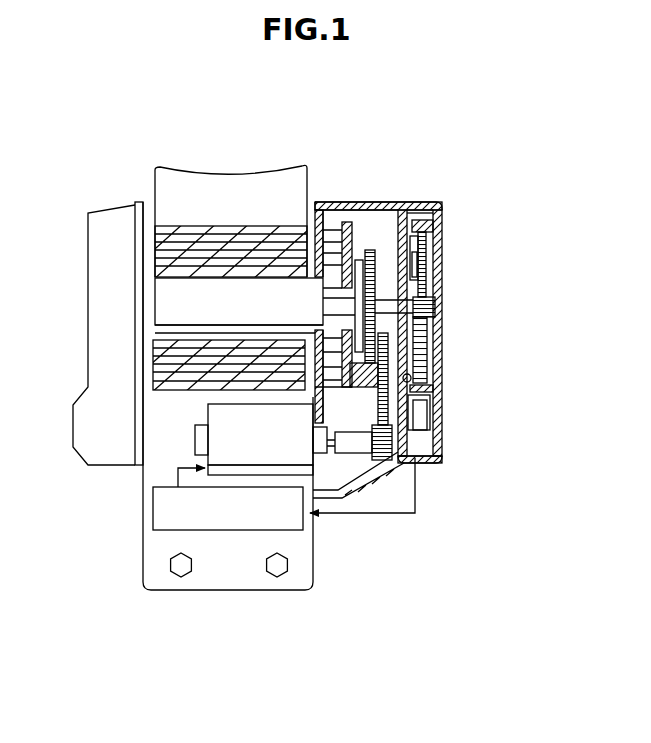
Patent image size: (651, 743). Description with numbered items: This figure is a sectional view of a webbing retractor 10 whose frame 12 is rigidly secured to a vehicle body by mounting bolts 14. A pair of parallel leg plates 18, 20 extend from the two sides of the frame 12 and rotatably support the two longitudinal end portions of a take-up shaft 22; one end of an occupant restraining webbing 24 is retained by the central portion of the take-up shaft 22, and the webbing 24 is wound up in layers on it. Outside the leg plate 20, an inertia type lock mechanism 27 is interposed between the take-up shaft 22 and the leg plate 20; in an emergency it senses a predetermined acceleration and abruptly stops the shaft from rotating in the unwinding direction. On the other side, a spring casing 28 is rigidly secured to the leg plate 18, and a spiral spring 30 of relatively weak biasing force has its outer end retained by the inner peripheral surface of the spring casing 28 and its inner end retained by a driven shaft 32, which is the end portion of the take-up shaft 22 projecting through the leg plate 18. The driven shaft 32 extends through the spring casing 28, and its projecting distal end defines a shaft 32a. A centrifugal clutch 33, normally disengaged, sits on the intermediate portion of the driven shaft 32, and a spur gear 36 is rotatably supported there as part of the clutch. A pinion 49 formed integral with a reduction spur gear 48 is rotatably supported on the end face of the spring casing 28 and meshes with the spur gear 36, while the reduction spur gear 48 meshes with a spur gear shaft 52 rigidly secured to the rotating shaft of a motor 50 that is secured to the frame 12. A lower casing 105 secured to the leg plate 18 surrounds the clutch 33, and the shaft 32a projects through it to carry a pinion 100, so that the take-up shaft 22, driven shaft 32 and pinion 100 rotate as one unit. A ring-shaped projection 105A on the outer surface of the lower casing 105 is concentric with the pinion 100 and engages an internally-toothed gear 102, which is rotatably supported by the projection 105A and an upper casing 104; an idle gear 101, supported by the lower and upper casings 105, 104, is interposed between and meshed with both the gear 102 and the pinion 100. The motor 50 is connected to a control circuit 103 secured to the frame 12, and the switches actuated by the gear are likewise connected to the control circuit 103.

The webbing retractor 10 is at (323, 132).
The frame 12 is at (143, 502).
The mounting bolts 14 is at (278, 578).
The leg plate 18 is at (316, 203).
The leg plate 20 is at (138, 202).
The take-up shaft 22 is at (152, 303).
The occupant restraining webbing 24 is at (243, 175).
The inertia type lock mechanism 27 is at (88, 355).
The spring casing 28 is at (345, 262).
The spiral spring 30 is at (346, 205).
The driven shaft 32 is at (328, 300).
The shaft 32a is at (428, 320).
The centrifugal clutch 33 is at (392, 295).
The spur gear 36 is at (421, 219).
The reduction spur gear 48 is at (389, 350).
The pinion 49 is at (363, 388).
The motor 50 is at (208, 413).
The spur gear shaft 52 is at (373, 470).
The pinion 100 is at (446, 312).
The idle gear 101 is at (432, 258).
The internally-toothed gear 102 is at (446, 214).
The control circuit 103 is at (290, 520).
The upper casing 104 is at (430, 436).
The lower casing 105 is at (390, 205).
The ring-shaped projection 105A is at (428, 392).